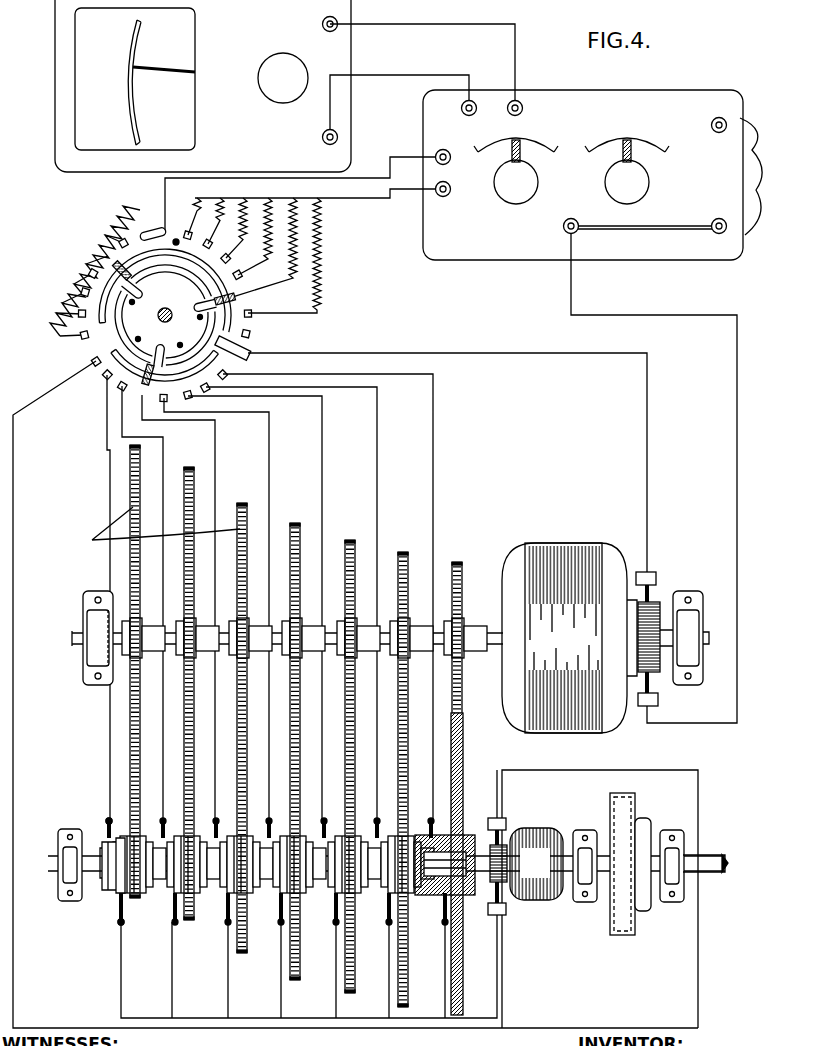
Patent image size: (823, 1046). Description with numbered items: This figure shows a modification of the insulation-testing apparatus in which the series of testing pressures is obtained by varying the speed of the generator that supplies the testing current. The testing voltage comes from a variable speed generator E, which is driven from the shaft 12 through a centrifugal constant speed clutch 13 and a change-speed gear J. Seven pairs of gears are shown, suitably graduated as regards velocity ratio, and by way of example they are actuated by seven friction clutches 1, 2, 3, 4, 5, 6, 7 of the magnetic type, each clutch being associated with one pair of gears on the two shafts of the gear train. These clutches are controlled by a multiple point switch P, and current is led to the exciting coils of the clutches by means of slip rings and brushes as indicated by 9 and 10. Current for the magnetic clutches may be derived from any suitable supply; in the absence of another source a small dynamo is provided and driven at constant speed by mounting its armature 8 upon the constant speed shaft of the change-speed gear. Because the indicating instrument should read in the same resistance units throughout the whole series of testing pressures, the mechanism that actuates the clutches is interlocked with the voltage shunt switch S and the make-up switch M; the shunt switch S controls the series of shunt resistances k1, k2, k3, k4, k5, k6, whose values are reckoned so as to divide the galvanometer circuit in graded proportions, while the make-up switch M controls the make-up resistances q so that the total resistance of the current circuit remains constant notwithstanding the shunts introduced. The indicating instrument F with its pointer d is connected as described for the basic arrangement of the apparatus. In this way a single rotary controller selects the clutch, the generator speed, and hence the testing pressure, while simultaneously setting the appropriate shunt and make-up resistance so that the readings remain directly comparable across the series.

The friction clutch 1 is at (127, 893).
The friction clutch 2 is at (181, 893).
The friction clutch 3 is at (234, 893).
The friction clutch 4 is at (287, 893).
The friction clutch 5 is at (342, 893).
The friction clutch 6 is at (395, 893).
The friction clutch 7 is at (452, 895).
The armature 8 is at (525, 871).
The slip rings 9 is at (119, 893).
The brushes 10 is at (118, 915).
The shaft 12 is at (706, 874).
The centrifugal constant speed clutch 13 is at (630, 874).
The variable speed generator E is at (605, 638).
The meter F is at (285, 86).
The meter pointer d is at (164, 57).
The make-up resistances q is at (85, 271).
The make-up switch M is at (161, 282).
The multiple-point shunt switch S is at (201, 329).
The multiple point switch P is at (148, 338).
The change-speed gear J is at (158, 532).
The shunt resistance k1 is at (288, 246).
The shunt resistance k2 is at (270, 238).
The shunt resistance k3 is at (258, 227).
The shunt resistance k4 is at (240, 219).
The shunt resistance k5 is at (219, 212).
The shunt resistance k6 is at (197, 207).